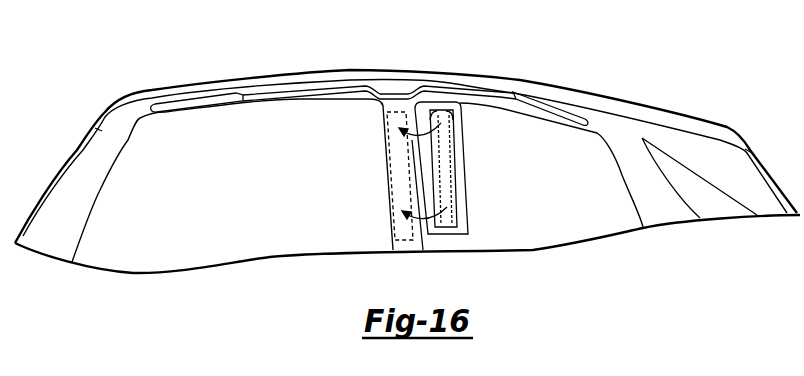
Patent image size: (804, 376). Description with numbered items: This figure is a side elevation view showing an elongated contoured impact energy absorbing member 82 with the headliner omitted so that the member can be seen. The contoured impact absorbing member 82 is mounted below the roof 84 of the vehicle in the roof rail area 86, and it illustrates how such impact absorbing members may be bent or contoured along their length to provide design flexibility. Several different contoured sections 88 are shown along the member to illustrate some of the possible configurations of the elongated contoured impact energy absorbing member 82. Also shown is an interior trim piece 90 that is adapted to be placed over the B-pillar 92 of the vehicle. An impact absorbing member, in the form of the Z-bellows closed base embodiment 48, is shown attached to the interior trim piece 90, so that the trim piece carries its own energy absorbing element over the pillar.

The Z-bellows closed base embodiment 48 is at (455, 219).
The contoured impact absorbing member 82 is at (303, 92).
The roof 84 is at (200, 90).
The roof rail area 86 is at (582, 105).
The contoured sections 88 is at (240, 92).
The interior trim piece 90 is at (460, 170).
The B-pillar 92 is at (395, 205).